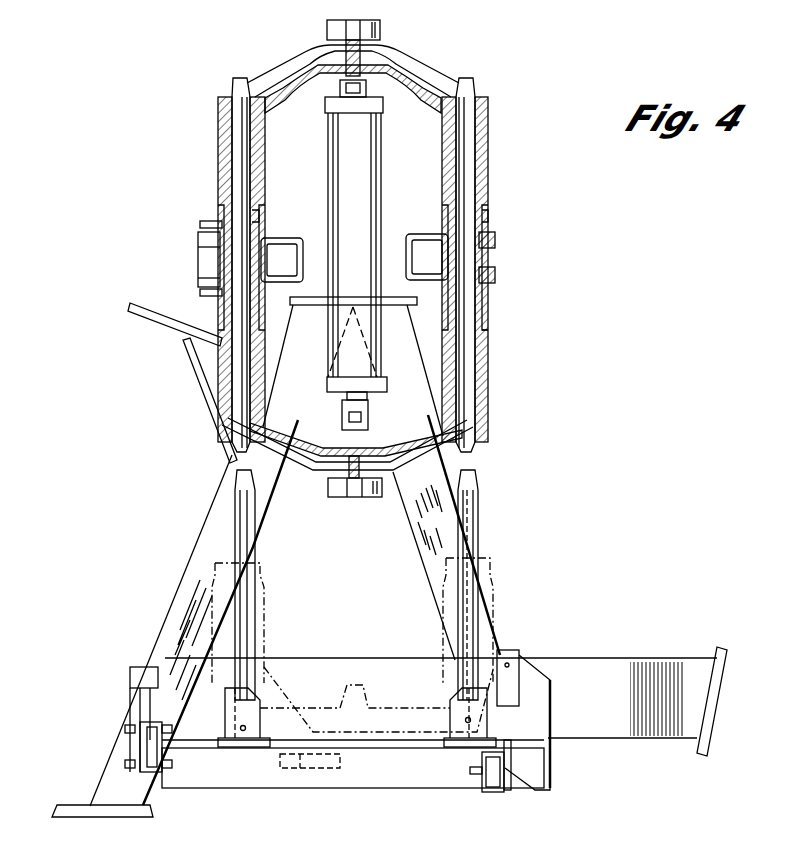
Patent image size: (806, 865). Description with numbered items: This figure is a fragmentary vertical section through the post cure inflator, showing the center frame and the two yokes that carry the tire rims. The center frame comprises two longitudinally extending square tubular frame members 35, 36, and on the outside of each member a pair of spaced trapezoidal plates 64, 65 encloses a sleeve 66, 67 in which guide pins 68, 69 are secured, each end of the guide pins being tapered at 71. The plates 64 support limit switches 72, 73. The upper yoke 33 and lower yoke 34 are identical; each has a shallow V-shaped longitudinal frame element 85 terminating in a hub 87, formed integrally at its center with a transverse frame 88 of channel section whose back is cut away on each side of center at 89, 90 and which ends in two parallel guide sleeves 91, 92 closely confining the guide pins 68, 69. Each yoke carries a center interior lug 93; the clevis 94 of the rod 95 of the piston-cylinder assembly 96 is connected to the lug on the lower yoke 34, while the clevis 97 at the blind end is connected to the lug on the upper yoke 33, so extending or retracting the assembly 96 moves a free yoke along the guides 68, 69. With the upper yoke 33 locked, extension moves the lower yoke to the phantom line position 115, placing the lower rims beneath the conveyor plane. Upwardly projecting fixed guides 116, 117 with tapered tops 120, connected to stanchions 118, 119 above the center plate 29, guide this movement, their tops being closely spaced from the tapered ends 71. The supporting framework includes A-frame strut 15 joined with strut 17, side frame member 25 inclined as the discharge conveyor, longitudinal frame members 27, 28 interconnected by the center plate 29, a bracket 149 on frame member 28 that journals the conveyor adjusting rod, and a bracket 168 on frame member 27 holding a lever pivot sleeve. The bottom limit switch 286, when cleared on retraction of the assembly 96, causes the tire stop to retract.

The upper yoke 33 is at (386, 36).
The clevis 97 is at (370, 88).
The piston-cylinder assembly 96 is at (383, 152).
The guide pin 68 is at (236, 138).
The guide pin 69 is at (468, 138).
The sleeve 66 is at (259, 222).
The sleeve 67 is at (483, 222).
The square tubular frame member 36 is at (285, 238).
The square tubular frame member 35 is at (418, 234).
The limit switch 72 is at (203, 226).
The trapezoidal plates 64 is at (200, 243).
The limit switch 73 is at (200, 270).
The trapezoidal plates 65 is at (505, 270).
The guide sleeve 91 is at (225, 368).
The guide sleeve 92 is at (489, 366).
The rod 95 is at (330, 388).
The clevis 94 is at (342, 406).
The center interior lug 93 is at (368, 420).
The tapered end 71 is at (476, 433).
The cut-away 89 is at (296, 440).
The cut-away 90 is at (412, 440).
The transverse frame 88 is at (313, 472).
The tapered top 120 is at (478, 478).
The fixed guide 116 is at (240, 512).
The fixed guide 117 is at (478, 524).
The lower yoke 34 is at (332, 488).
The longitudinal frame element 85 is at (350, 497).
The hub 87 is at (377, 498).
The A-frame strut 15 is at (198, 572).
The strut 17 is at (422, 548).
The phantom line position 115 is at (423, 668).
The bracket 149 is at (130, 690).
The stanchion 118 is at (226, 712).
The stanchion 119 is at (458, 718).
The bracket 168 is at (540, 700).
The frame member 25 is at (578, 738).
The frame member 28 is at (148, 774).
The center plate 29 is at (243, 782).
The bottom limit switch 286 is at (292, 780).
The frame member 27 is at (488, 795).